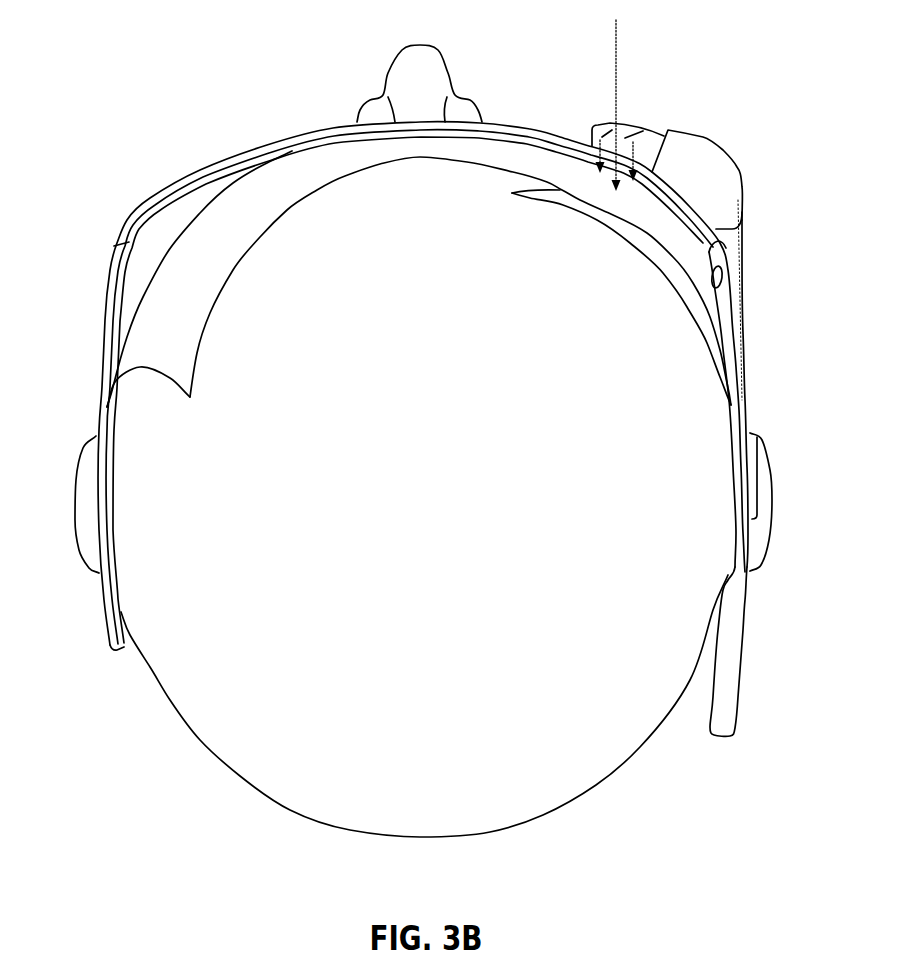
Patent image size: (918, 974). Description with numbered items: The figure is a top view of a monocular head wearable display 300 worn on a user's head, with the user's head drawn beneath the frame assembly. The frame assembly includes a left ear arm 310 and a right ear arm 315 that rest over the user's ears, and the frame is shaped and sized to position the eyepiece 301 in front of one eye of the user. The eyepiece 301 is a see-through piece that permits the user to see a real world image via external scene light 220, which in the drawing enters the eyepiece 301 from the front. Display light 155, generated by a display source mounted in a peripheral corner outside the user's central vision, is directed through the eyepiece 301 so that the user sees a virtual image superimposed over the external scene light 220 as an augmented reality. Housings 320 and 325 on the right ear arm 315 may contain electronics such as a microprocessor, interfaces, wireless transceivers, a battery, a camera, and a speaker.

The head wearable display 300 is at (170, 97).
The left ear arm 310 is at (104, 324).
The right ear arm 315 is at (740, 380).
The housing 320 is at (693, 185).
The housing 325 is at (735, 657).
The eyepiece 301 is at (643, 127).
The display light 155 is at (594, 143).
The external scene light 220 is at (617, 62).